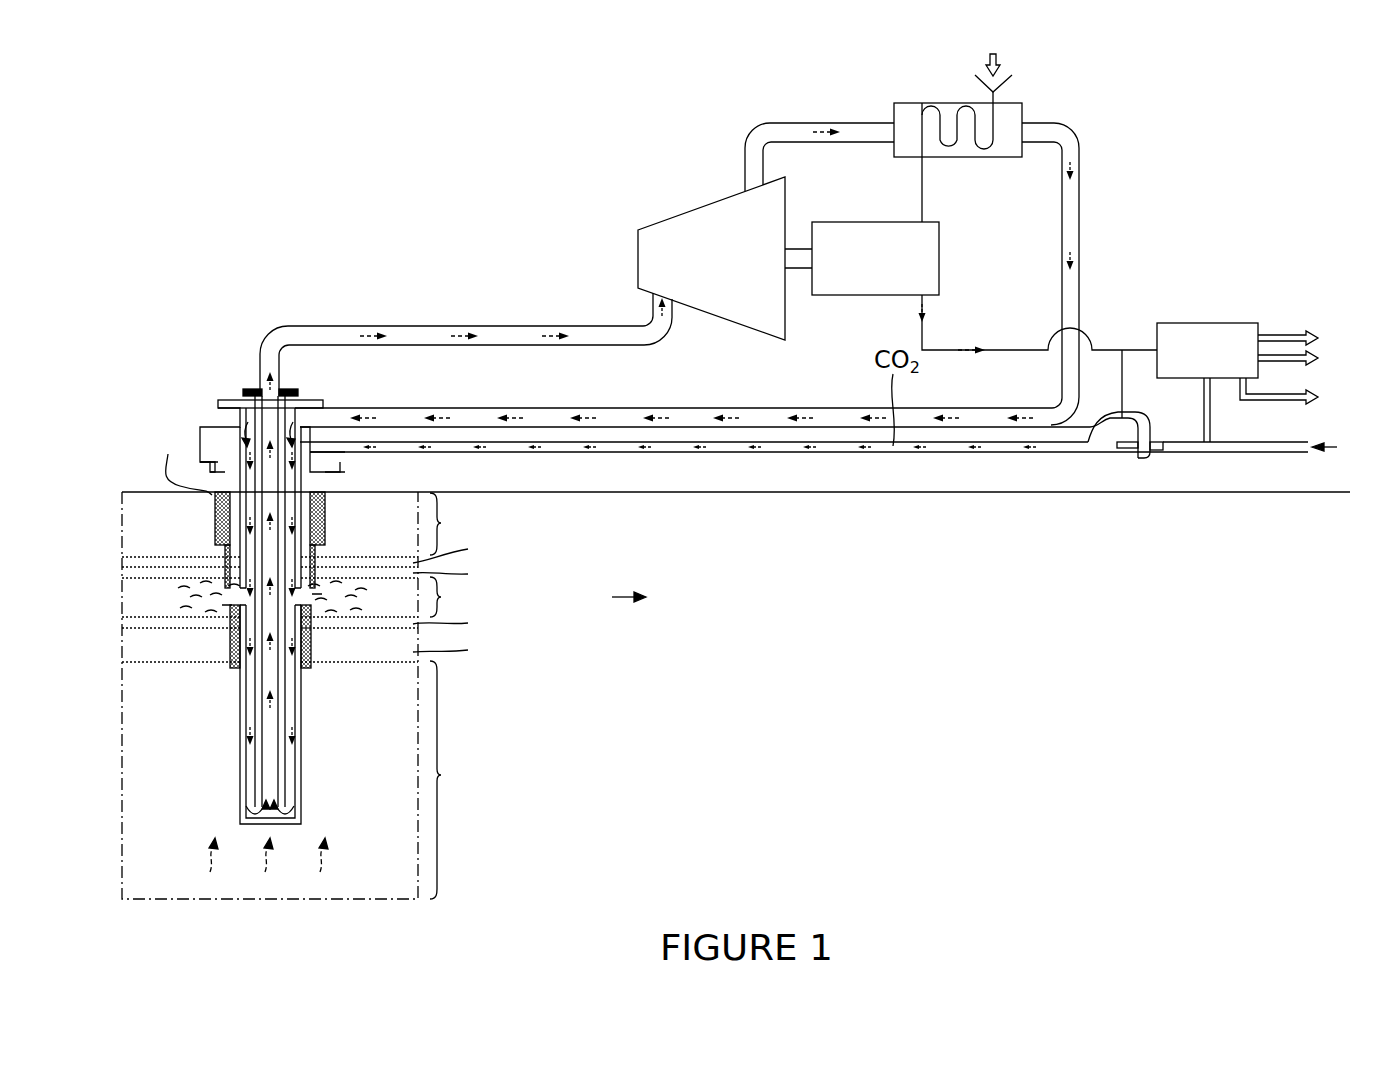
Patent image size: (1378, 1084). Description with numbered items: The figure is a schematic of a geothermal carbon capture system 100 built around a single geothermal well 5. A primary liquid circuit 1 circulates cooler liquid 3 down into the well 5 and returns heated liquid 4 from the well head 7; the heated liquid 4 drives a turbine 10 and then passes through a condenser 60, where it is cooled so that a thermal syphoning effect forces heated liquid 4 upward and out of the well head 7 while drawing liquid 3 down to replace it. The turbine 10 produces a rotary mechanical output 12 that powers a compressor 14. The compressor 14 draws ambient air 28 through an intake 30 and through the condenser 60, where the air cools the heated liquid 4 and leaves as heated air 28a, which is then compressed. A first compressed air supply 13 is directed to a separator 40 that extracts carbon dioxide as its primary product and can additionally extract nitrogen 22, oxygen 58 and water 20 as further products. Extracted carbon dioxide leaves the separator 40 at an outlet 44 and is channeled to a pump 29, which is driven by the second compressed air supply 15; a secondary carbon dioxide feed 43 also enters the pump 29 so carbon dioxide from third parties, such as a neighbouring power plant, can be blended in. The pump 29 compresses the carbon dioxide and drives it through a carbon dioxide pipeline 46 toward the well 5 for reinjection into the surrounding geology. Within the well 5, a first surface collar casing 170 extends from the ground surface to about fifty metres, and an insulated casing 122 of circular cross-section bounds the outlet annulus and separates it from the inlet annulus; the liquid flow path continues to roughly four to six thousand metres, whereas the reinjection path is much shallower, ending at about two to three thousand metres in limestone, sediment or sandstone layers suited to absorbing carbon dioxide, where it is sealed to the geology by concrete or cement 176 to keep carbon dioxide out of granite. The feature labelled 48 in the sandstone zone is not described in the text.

The geothermal carbon capture system 100 is at (246, 161).
The well head 7 is at (203, 380).
The heated liquid 4 is at (467, 325).
The primary liquid circuit 1 is at (460, 390).
The turbine 10 is at (705, 273).
The mechanical output 12 is at (800, 258).
The compressor 14 is at (864, 273).
The condenser 60 is at (907, 102).
The ambient air 28 is at (1001, 62).
The intake 30 is at (1004, 82).
The heated ambient air 28a is at (924, 192).
The first compressed air supply 13 is at (1010, 348).
The second compressed air supply 15 is at (1118, 370).
The separator 40 is at (1196, 362).
The nitrogen 22 is at (1301, 337).
The oxygen 58 is at (1301, 357).
The water 20 is at (1292, 394).
The outlet 44 is at (1212, 420).
The secondary carbon dioxide feed 43 is at (1338, 447).
The pump 29 is at (1143, 457).
The liquid 3 is at (728, 407).
The carbon dioxide pipeline 46 is at (835, 446).
The first surface collar casing 170 is at (217, 494).
The sandstone reservoir 48 is at (135, 609).
The cement 176 is at (305, 663).
The insulated casing 122 is at (283, 715).
The geothermal well 5 is at (300, 742).